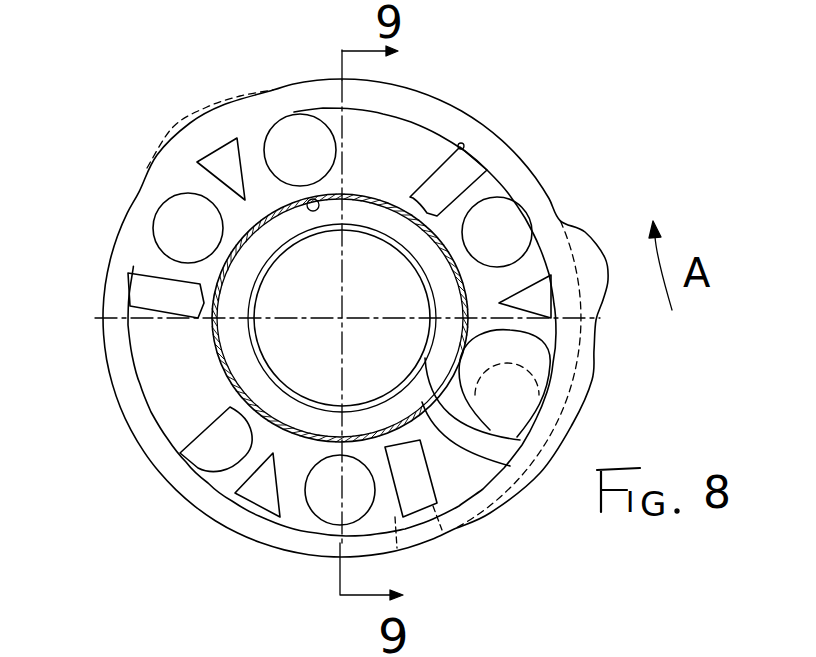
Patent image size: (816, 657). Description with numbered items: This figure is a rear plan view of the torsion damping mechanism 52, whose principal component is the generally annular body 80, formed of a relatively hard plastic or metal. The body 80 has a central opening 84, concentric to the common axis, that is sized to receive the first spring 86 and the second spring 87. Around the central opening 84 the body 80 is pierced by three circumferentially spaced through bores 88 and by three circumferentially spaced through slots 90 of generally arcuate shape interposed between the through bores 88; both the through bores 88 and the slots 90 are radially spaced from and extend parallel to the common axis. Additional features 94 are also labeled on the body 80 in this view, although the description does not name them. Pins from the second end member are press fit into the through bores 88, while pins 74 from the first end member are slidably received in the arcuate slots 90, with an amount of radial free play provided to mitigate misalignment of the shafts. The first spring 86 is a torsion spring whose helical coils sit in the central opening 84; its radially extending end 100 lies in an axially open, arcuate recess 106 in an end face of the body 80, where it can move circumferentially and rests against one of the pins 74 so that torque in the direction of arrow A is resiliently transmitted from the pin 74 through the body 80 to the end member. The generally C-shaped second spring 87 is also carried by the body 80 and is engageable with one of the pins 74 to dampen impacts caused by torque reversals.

The torsion damping mechanism 52 is at (609, 134).
The pin 74 is at (548, 372).
The body 80 is at (132, 178).
The central opening 84 is at (307, 200).
The first spring 86 is at (286, 369).
The second spring 87 is at (168, 474).
The through bores 88 is at (165, 206).
The through slots 90 is at (410, 117).
The notches 94 is at (143, 290).
The end 100 is at (490, 422).
The arcuate recess 106 is at (397, 523).